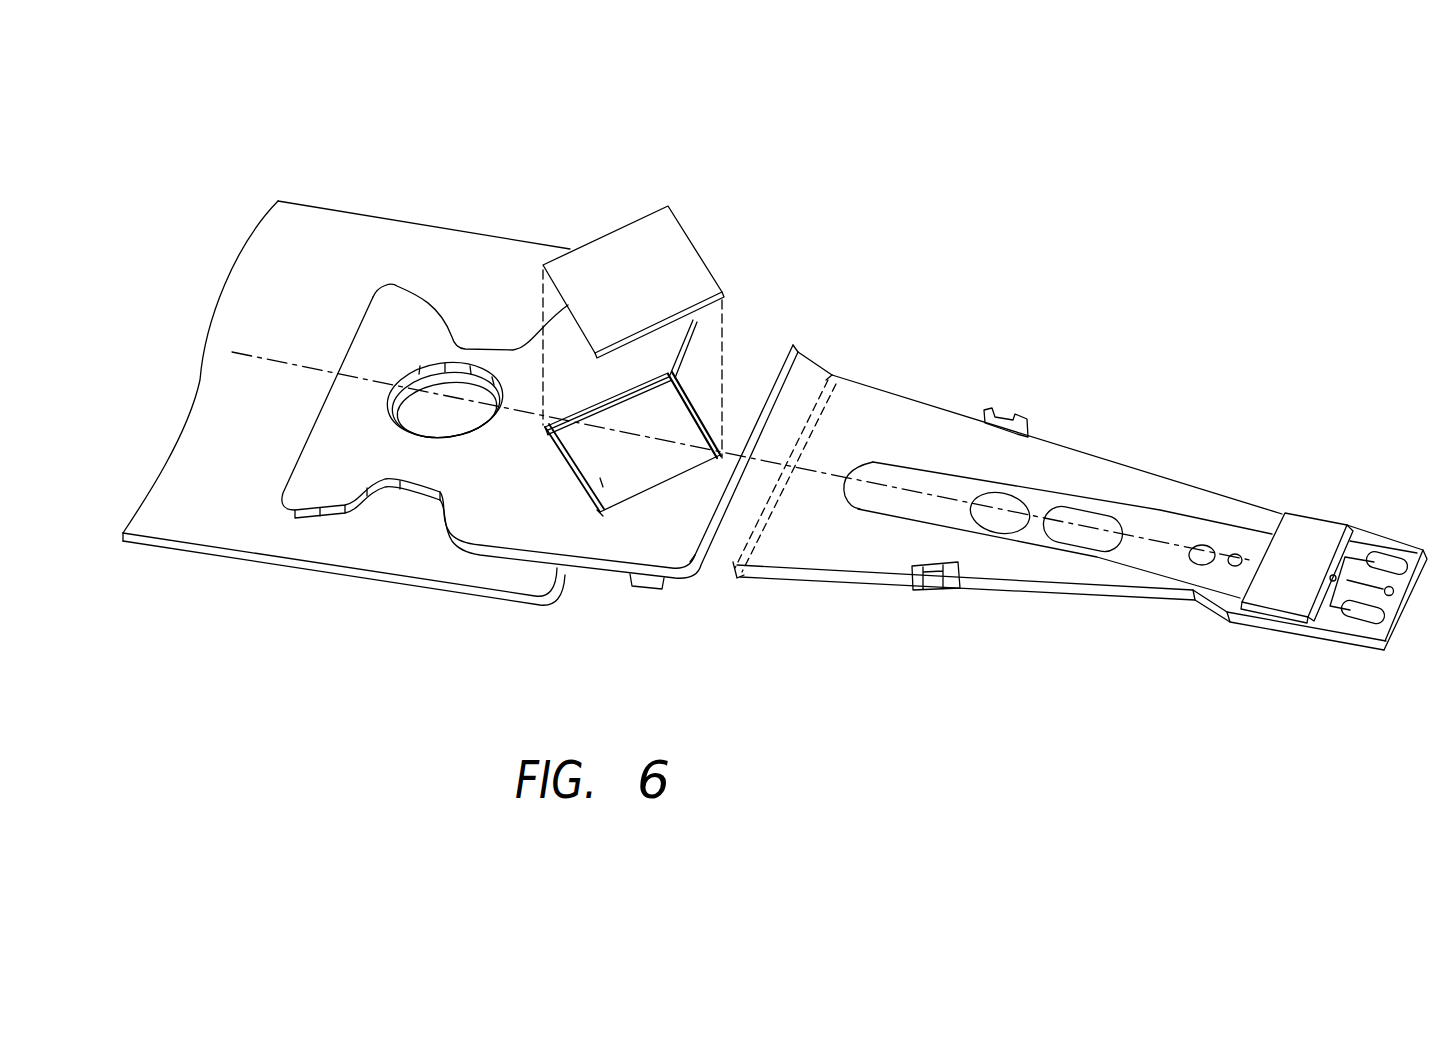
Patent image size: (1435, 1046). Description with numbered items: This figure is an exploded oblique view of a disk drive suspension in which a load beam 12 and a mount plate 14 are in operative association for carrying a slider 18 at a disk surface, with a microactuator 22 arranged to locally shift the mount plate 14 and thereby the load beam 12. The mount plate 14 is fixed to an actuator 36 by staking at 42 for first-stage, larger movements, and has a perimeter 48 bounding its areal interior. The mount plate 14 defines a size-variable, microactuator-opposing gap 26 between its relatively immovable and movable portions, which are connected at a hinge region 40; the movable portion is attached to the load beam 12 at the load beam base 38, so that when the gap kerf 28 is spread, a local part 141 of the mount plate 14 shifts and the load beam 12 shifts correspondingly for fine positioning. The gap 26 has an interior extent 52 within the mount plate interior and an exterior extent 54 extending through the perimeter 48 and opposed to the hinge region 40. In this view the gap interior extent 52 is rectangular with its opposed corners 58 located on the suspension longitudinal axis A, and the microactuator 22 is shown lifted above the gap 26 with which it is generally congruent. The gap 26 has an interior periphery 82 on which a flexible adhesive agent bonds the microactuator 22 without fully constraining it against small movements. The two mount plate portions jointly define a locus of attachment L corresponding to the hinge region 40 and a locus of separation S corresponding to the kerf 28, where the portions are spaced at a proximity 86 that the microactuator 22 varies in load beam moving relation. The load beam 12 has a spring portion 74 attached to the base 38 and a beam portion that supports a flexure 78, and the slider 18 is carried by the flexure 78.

The load beam 12 is at (810, 380).
The mount plate 14 is at (395, 325).
The slider 18 is at (1332, 530).
The microactuator 22 is at (650, 232).
The gap 26 is at (603, 480).
The gap kerf 28 is at (793, 345).
The actuator 36 is at (298, 223).
The load beam base 38 is at (683, 593).
The hinge region 40 is at (590, 523).
The staking 42 is at (430, 388).
The perimeter 48 is at (350, 512).
The gap interior extent 52 is at (705, 462).
The gap exterior extent 54 is at (672, 365).
The opposed corners 58 is at (557, 432).
The spring portion 74 is at (768, 552).
The flexure 78 is at (1250, 537).
The interior periphery 82 is at (643, 476).
The proximity 86 is at (772, 357).
The local part of mount plate 141 is at (778, 352).
The suspension longitudinal axis A is at (741, 448).
The locus of separation S is at (688, 365).
The locus of attachment L is at (587, 545).